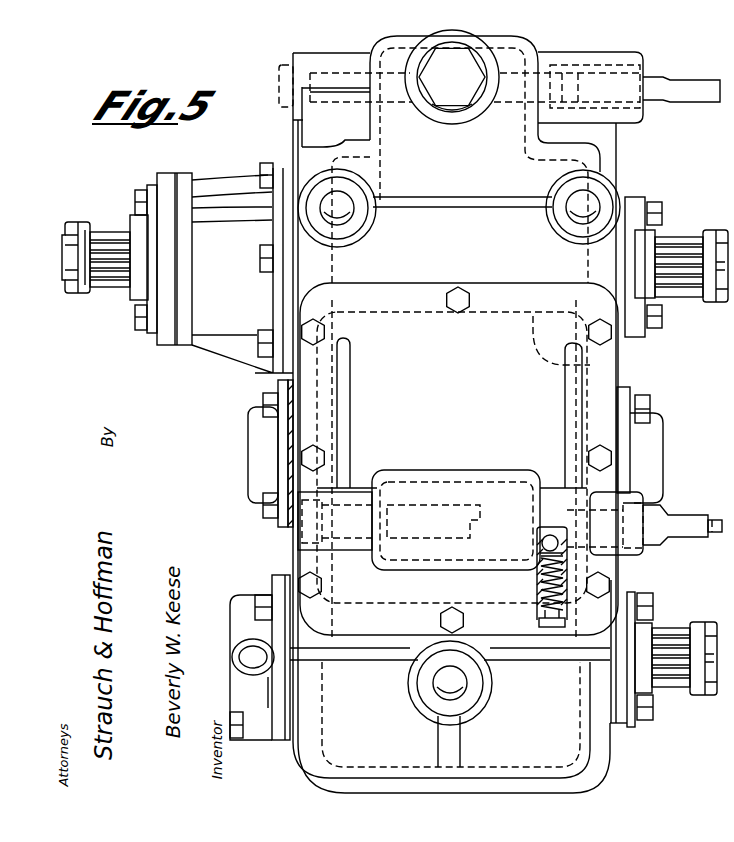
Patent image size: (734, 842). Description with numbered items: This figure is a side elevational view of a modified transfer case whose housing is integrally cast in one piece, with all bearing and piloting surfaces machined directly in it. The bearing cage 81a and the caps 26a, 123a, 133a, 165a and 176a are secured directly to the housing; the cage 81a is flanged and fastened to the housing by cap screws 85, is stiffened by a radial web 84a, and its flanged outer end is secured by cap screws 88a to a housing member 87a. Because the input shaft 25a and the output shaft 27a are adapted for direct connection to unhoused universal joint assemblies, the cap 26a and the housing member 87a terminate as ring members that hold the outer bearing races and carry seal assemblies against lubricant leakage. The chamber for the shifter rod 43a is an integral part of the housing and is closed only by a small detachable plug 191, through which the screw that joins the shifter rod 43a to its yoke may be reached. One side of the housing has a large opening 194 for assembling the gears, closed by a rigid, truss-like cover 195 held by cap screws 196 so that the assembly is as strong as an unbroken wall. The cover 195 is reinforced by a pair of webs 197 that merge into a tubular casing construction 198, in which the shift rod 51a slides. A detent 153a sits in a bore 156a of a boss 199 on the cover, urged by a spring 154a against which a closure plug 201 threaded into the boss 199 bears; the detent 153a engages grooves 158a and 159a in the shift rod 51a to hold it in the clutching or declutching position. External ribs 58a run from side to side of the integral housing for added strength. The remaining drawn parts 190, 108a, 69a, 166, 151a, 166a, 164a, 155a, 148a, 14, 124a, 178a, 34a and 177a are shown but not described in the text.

The flange 190 is at (284, 72).
The detachable plug 191 is at (450, 116).
The housing block 108a is at (643, 68).
The shifter rod 43a is at (690, 80).
The cap screws 88a is at (140, 190).
The bearing cage 81a is at (213, 228).
The cap screws 85 is at (263, 258).
The output shaft 27a is at (110, 232).
The housing member 87a is at (134, 300).
The radial web 84a is at (218, 358).
The cap 26a is at (652, 253).
The input shaft 25a is at (690, 298).
The bolts 69a is at (652, 330).
The bolts 166 is at (264, 404).
The cap 133a is at (250, 478).
The shaft 151a is at (300, 540).
The cap 165a is at (240, 600).
The bolt 166a is at (262, 598).
The plate 164a is at (288, 742).
The cover 195 is at (480, 380).
The cap screws 196 is at (452, 305).
The opening 194 is at (575, 368).
The webs 197 is at (528, 462).
The groove 158a is at (545, 470).
The groove 159a is at (486, 508).
The tubular casing construction 198 is at (435, 563).
The boss 199 is at (536, 612).
The detent 153a is at (545, 540).
The seat 155a is at (541, 552).
The spring 154a is at (540, 580).
The bore 156a is at (540, 600).
The closure plug 201 is at (552, 628).
The shaft housing 148a is at (645, 550).
The shift rod 51a is at (686, 515).
The shaft end 14 is at (718, 522).
The cap 123a is at (660, 447).
The bolt 124a is at (652, 406).
The cap 176a is at (640, 724).
The flange 178a is at (617, 742).
The splined shaft 34a is at (672, 628).
The bolts 177a is at (655, 707).
The ribs 58a is at (560, 793).